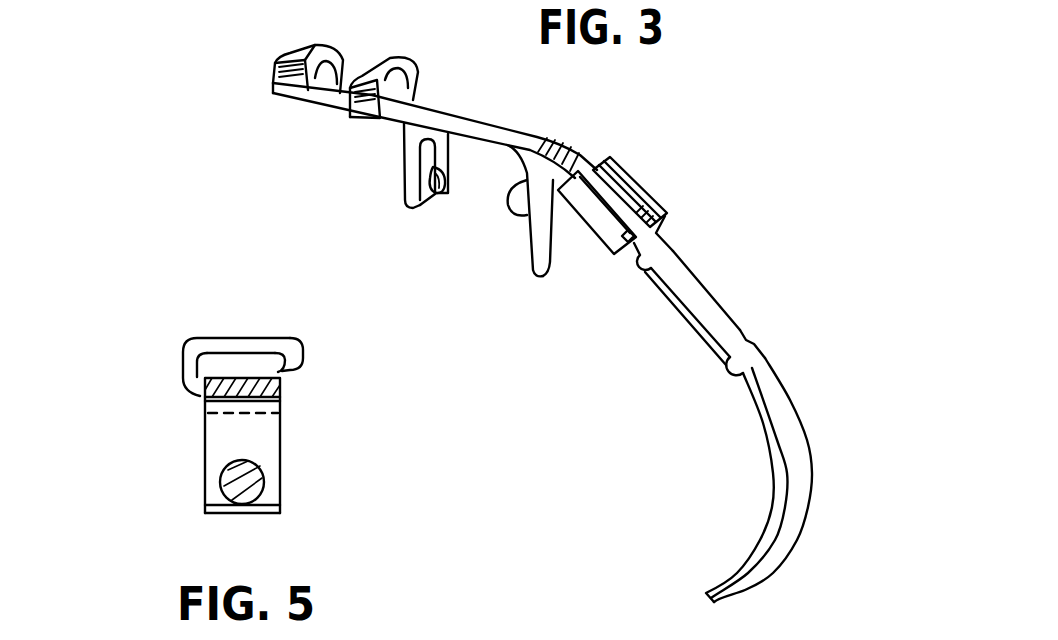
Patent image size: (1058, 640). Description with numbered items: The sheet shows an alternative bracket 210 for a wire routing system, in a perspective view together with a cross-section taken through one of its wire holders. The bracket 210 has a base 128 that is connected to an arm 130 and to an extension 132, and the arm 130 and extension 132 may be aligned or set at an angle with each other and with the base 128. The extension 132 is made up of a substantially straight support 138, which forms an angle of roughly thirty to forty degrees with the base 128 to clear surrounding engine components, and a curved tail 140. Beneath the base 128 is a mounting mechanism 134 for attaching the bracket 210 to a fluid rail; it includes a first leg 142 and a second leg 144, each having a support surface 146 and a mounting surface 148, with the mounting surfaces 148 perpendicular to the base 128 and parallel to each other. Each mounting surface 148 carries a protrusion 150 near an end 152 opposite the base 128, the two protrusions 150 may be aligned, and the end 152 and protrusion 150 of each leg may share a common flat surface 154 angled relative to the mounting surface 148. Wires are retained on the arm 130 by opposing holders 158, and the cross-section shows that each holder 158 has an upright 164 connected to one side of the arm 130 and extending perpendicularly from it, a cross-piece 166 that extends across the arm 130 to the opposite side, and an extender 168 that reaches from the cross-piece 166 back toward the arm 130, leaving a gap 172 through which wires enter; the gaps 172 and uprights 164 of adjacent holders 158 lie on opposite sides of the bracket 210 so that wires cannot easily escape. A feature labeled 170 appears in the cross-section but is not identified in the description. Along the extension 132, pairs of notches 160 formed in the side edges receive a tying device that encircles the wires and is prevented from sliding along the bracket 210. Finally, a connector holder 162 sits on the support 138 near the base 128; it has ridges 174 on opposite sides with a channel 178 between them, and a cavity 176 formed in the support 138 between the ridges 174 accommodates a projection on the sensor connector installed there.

In FIG. 3, the base 128 is at (465, 123).
In FIG. 3, the arm 130 is at (355, 80).
In FIG. 5, the arm 130 is at (290, 403).
In FIG. 3, the extension 132 is at (742, 330).
In FIG. 3, the mounting mechanism 134 is at (320, 144).
In FIG. 3, the support 138 is at (711, 298).
In FIG. 3, the tail 140 is at (787, 410).
In FIG. 3, the first leg 142 is at (418, 205).
In FIG. 5, the first leg 142 is at (277, 478).
In FIG. 3, the second leg 144 is at (527, 237).
In FIG. 3, the support surface 146 is at (412, 177).
In FIG. 3, the mounting surface 148 is at (449, 168).
In FIG. 5, the mounting surface 148 is at (212, 448).
In FIG. 3, the protrusion 150 is at (518, 210).
In FIG. 5, the protrusion 150 is at (227, 487).
In FIG. 5, the end 152 is at (260, 513).
In FIG. 5, the common flat surface 154 is at (242, 500).
In FIG. 3, the holder 158 is at (303, 52).
In FIG. 5, the holder 158 is at (183, 338).
In FIG. 3, the notch 160 is at (672, 250).
In FIG. 3, the connector holder 162 is at (602, 224).
In FIG. 5, the upright 164 is at (188, 367).
In FIG. 5, the cross-piece 166 is at (237, 347).
In FIG. 5, the extender 168 is at (302, 350).
In FIG. 5, the strap inner surface 170 is at (217, 367).
In FIG. 5, the gap 172 is at (282, 372).
In FIG. 3, the ridge 174 is at (589, 162).
In FIG. 3, the cavity 176 is at (652, 188).
In FIG. 3, the channel 178 is at (662, 210).
In FIG. 3, the alternative bracket 210 is at (488, 311).